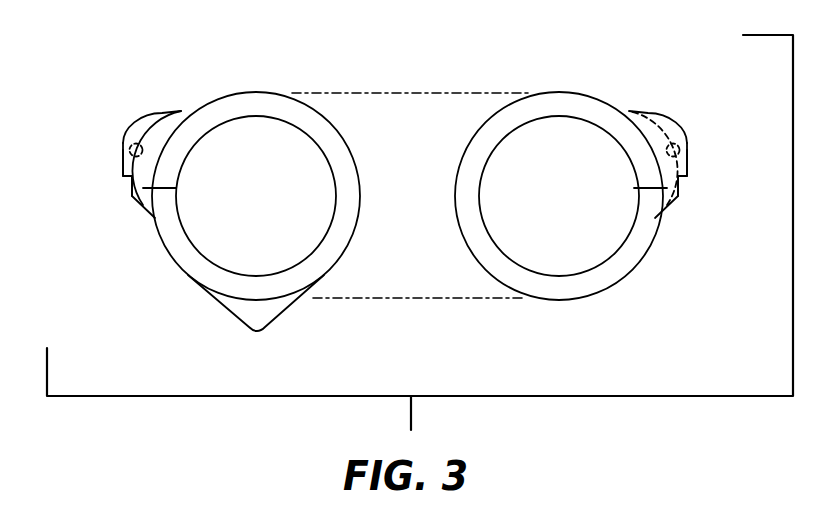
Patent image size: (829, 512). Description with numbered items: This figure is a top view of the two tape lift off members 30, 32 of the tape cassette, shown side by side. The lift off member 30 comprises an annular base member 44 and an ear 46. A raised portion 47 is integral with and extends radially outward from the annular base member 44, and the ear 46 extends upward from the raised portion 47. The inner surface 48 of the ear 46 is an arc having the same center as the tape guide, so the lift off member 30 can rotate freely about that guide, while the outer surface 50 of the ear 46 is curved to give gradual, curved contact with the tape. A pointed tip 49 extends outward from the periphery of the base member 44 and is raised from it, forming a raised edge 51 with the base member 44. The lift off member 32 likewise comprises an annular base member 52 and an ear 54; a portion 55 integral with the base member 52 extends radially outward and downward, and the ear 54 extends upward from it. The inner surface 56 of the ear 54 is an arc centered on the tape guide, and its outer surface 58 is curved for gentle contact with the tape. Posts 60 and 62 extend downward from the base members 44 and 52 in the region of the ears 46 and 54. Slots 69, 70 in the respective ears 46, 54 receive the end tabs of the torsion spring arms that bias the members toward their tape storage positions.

The lift off member 30 is at (272, 84).
The lift off member 32 is at (544, 84).
The annular base member 44 is at (187, 255).
The ear 46 is at (153, 120).
The raised portion 47 is at (176, 122).
The inner surface 48 is at (176, 188).
The pointed tip 49 is at (268, 308).
The outer surface 50 is at (121, 165).
The raised edge 51 is at (250, 302).
The annular base member 52 is at (628, 252).
The ear 54 is at (660, 120).
The portion 55 is at (633, 122).
The inner surface 56 is at (634, 188).
The outer surface 58 is at (690, 166).
The post 60 is at (128, 136).
The post 62 is at (682, 137).
The slot 69 is at (130, 188).
The slot 70 is at (680, 186).